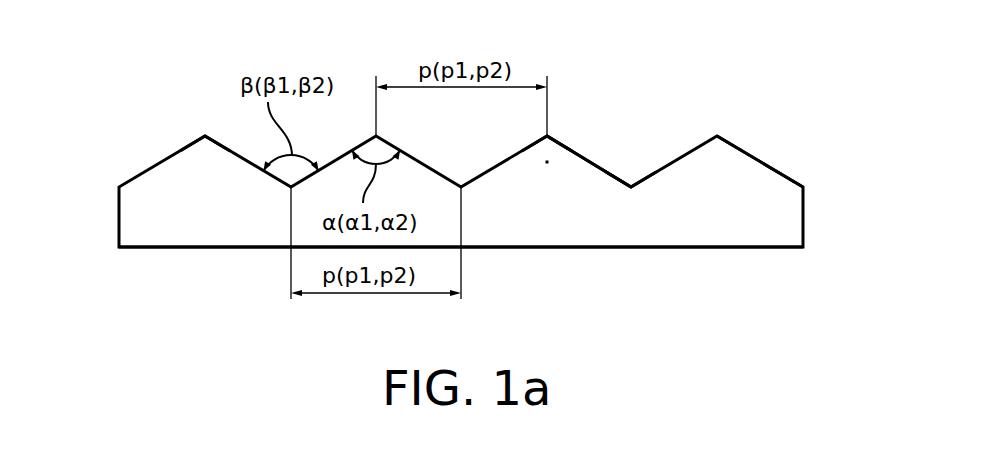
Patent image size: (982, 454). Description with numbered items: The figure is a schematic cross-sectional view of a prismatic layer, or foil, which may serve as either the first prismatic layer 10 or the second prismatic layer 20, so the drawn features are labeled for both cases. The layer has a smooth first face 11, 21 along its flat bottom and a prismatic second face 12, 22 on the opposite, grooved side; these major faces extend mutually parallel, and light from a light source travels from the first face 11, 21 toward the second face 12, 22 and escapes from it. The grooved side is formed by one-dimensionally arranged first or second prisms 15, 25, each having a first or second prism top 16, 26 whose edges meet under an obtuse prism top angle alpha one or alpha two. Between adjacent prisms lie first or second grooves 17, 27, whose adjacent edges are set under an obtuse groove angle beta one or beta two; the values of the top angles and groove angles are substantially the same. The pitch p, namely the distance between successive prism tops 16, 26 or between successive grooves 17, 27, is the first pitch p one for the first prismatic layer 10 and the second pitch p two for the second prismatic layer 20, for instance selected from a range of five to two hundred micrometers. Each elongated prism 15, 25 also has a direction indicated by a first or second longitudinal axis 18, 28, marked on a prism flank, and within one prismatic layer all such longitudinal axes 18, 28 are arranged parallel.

The first prismatic layer 10 is at (418, 191).
The second prismatic layer 20 is at (110, 208).
The first face 11 is at (461, 293).
The first face 21 is at (717, 247).
The second face 12 is at (771, 132).
The second face 22 is at (763, 160).
The first prisms 15 is at (621, 100).
The second prisms 25 is at (596, 138).
The first prism tops 16 is at (390, 101).
The second prism tops 26 is at (205, 136).
The first grooves 17 is at (651, 144).
The second grooves 27 is at (632, 178).
The first longitudinal axes 18 is at (573, 232).
The second longitudinal axes 28 is at (547, 164).